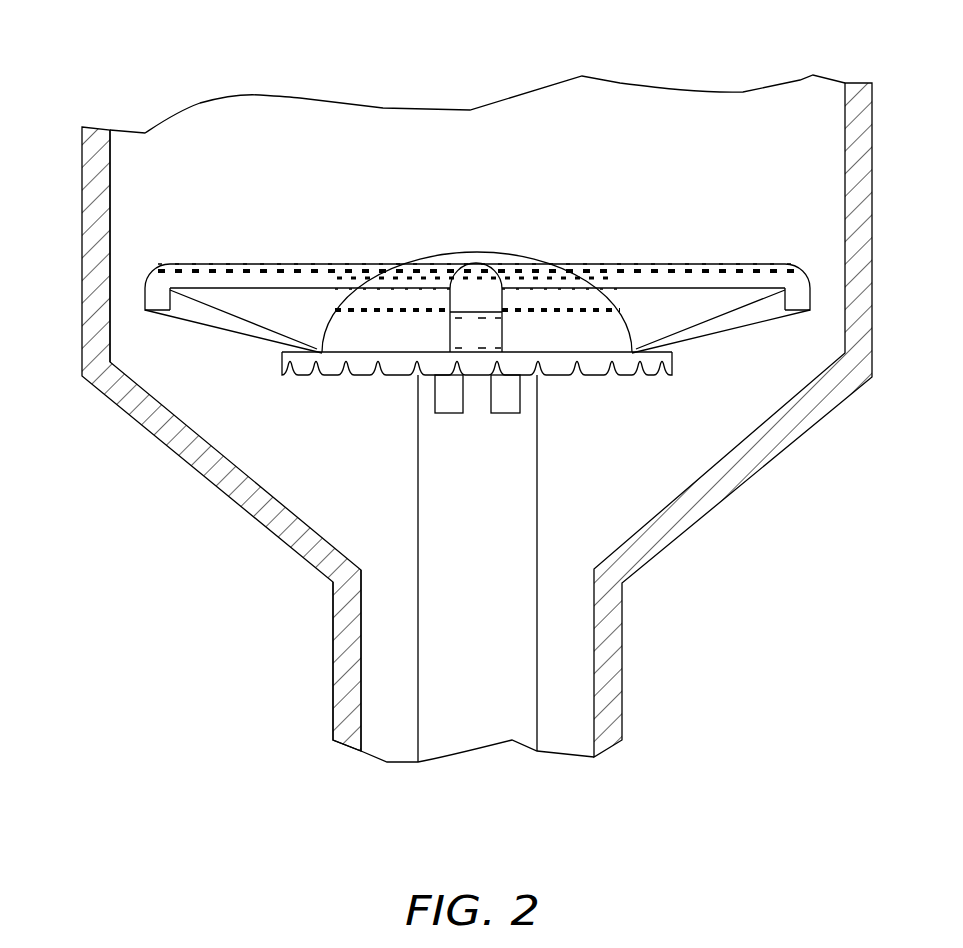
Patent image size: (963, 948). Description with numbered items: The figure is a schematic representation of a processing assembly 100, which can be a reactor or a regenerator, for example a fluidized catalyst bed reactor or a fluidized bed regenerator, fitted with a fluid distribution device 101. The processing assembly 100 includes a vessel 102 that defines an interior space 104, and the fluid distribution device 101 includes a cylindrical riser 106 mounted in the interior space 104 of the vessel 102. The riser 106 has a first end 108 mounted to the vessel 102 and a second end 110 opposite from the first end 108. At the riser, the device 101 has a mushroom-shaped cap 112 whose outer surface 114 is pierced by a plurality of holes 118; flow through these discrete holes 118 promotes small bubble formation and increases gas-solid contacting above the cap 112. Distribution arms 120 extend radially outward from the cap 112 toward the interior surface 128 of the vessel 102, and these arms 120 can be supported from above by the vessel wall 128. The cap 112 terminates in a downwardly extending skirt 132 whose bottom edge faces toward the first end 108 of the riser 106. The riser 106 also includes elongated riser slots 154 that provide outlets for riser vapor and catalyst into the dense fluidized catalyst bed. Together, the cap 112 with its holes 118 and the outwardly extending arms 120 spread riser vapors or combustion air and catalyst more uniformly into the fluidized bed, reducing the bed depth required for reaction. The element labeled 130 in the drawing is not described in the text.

The processing assembly 100 is at (131, 93).
The fluid distribution device 101 is at (553, 228).
The vessel 102 is at (82, 248).
The interior space 104 is at (478, 159).
The cylindrical riser 106 is at (548, 480).
The first end 108 is at (527, 723).
The second end 110 is at (425, 398).
The cap 112 is at (541, 264).
The outer surface 114 is at (400, 298).
The holes 118 is at (427, 278).
The distribution arms 120 is at (227, 250).
The interior surface 128 is at (110, 165).
The outlet neck 130 is at (360, 710).
The downwardly extending skirt 132 is at (602, 368).
The elongated riser slots 154 is at (452, 395).